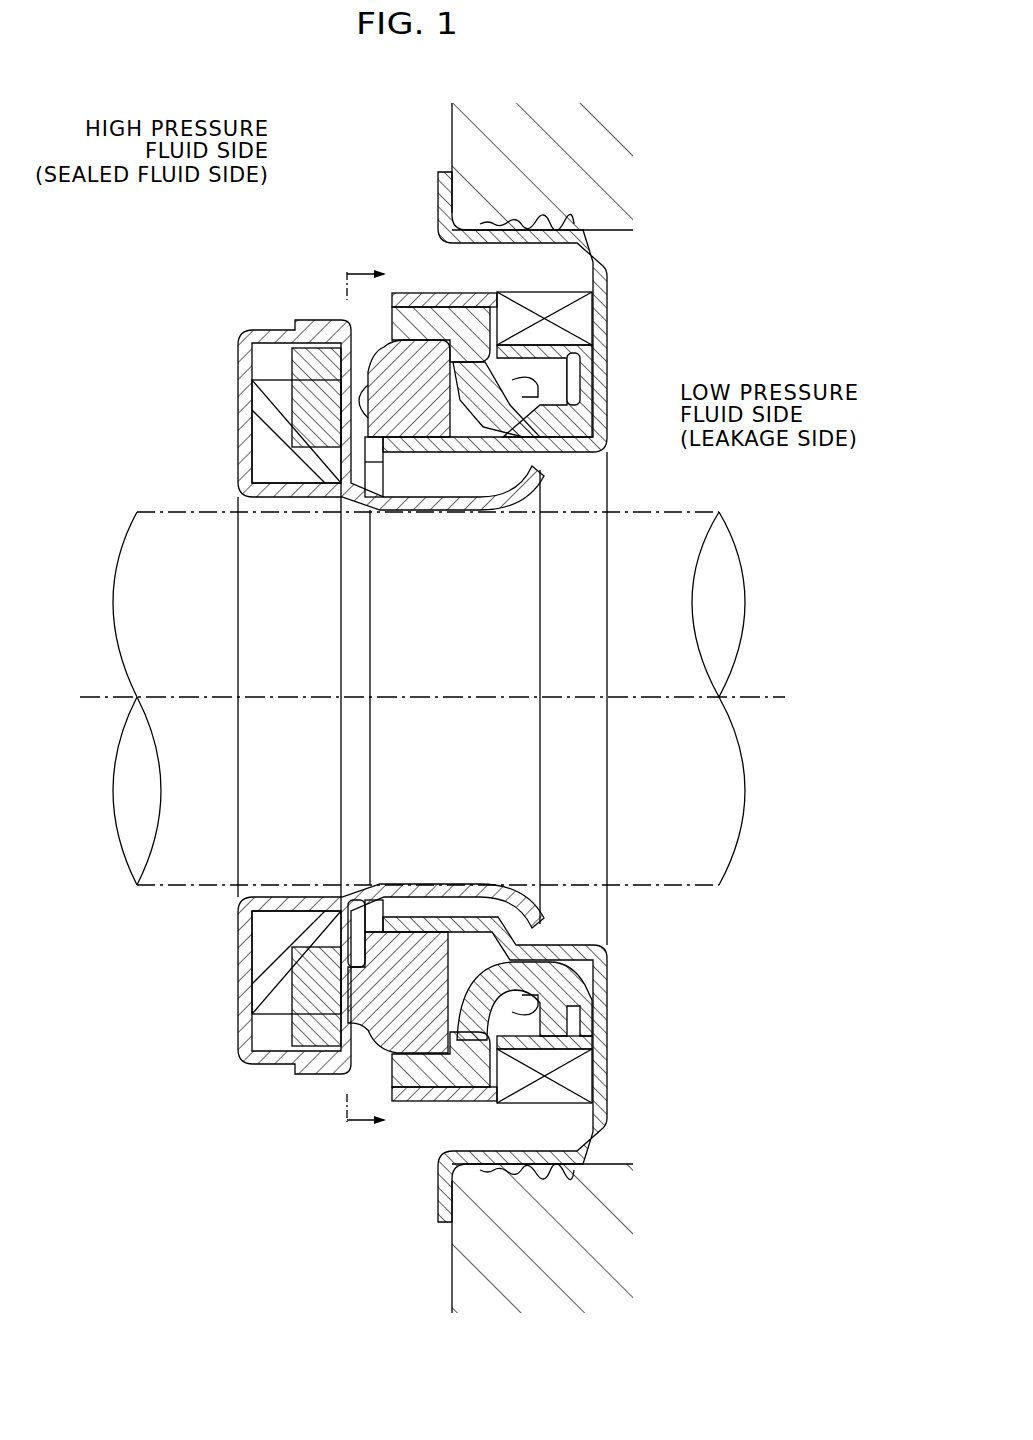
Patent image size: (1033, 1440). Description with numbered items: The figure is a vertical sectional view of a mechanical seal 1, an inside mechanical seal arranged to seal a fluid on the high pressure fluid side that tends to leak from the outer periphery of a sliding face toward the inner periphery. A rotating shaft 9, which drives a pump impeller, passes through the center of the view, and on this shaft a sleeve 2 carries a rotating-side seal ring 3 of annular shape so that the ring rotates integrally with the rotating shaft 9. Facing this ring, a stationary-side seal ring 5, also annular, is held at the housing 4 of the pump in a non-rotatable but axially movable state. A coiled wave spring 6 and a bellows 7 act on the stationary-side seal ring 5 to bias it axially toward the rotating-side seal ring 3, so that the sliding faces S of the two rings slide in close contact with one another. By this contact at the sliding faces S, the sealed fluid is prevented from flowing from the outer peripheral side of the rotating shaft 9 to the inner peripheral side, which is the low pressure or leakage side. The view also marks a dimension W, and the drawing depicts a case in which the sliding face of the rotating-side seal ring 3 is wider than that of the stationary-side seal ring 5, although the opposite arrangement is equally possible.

The mechanical seal 1 is at (108, 344).
The sleeve 2 is at (240, 404).
The rotating-side seal ring 3 is at (262, 352).
The housing 4 is at (475, 142).
The stationary-side seal ring 5 is at (413, 407).
The coiled wave spring 6 is at (583, 312).
The bellows 7 is at (422, 293).
The rotating shaft 9 is at (190, 884).
The sliding faces S is at (362, 415).
The width W is at (365, 700).